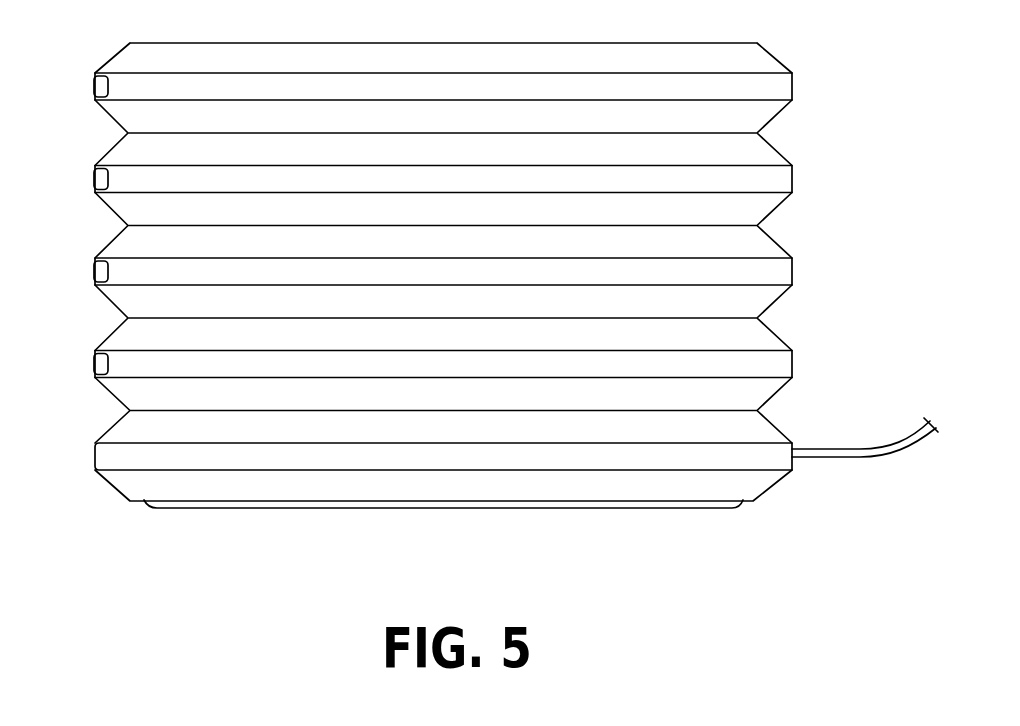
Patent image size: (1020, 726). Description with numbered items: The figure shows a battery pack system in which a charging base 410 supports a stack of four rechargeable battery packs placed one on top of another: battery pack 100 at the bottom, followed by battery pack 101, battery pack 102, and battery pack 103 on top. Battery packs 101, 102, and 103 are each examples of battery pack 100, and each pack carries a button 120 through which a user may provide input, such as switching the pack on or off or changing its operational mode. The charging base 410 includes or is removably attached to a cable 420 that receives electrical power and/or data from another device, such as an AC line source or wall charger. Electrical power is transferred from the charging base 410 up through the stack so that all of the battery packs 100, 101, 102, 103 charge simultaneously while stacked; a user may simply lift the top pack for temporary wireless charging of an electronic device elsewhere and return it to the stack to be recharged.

The battery pack 100 is at (792, 353).
The battery pack 101 is at (792, 261).
The battery pack 102 is at (792, 168).
The battery pack 103 is at (792, 75).
The button 120 is at (101, 88).
The charging base 410 is at (792, 446).
The cable 420 is at (853, 453).